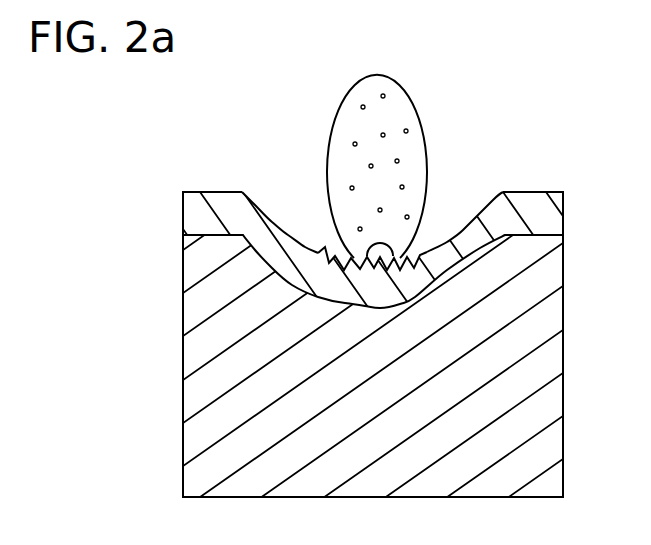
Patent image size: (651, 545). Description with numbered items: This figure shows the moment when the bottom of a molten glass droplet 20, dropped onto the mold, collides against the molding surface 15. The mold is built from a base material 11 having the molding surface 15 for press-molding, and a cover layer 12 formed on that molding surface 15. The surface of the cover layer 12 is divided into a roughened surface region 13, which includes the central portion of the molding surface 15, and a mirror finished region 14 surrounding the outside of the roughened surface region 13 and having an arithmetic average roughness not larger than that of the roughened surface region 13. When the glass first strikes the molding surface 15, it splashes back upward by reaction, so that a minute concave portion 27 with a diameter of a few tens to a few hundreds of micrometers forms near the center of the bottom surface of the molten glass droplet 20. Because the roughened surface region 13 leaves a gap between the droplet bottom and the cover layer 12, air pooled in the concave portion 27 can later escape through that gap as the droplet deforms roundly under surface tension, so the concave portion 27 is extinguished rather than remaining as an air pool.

The base material 11 is at (192, 360).
The cover layer 12 is at (192, 215).
The roughened surface region 13 is at (334, 246).
The mirror finished region 14 is at (290, 235).
The molding surface 15 is at (372, 186).
The molten glass droplet 20 is at (398, 102).
The concave portion 27 is at (380, 245).